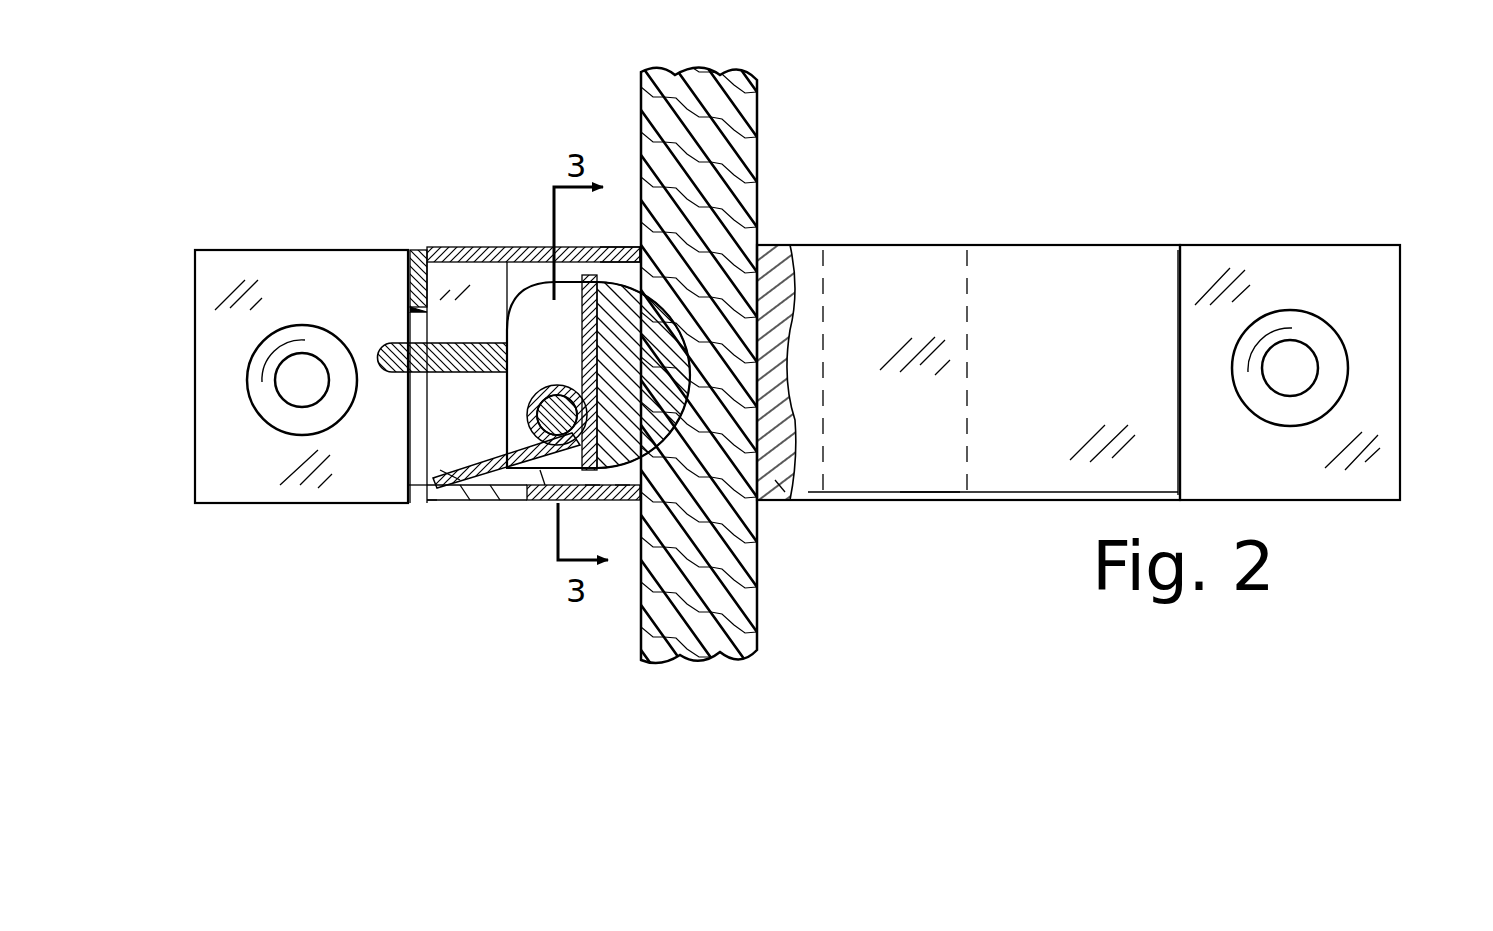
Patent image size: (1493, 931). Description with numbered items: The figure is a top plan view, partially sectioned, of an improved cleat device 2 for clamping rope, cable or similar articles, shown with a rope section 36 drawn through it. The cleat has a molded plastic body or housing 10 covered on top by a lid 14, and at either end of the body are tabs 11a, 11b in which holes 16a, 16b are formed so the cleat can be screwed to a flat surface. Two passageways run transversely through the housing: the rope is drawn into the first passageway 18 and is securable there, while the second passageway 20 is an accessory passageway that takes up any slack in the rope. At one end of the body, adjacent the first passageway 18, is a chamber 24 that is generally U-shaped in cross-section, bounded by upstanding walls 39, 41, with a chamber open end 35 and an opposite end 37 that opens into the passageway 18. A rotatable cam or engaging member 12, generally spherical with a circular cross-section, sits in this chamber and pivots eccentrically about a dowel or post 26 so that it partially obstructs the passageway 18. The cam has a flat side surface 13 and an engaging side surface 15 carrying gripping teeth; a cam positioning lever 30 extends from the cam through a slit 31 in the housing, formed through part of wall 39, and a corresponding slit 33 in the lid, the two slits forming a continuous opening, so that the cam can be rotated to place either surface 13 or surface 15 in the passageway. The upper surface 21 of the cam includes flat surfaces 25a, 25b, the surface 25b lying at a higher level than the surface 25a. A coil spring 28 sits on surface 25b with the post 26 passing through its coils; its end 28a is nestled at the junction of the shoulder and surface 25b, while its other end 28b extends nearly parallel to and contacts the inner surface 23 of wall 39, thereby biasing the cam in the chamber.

The cleat device 2 is at (916, 128).
The body or housing 10 is at (480, 247).
The tab 11a is at (1395, 485).
The tab 11b is at (192, 482).
The cam or engaging member 12 is at (497, 485).
The flat side surface 13 is at (592, 490).
The lid 14 is at (418, 247).
The engaging side surface 15 is at (760, 242).
The hole 16a is at (1288, 310).
The hole 16b is at (300, 325).
The first passageway 18 is at (780, 490).
The second passageway 20 is at (920, 470).
The upper surface 21 is at (507, 388).
The inner surface 23 is at (443, 462).
The chamber 24 is at (473, 302).
The flat surface 25a is at (543, 340).
The flat surface 25b is at (643, 375).
The dowel or post 26 is at (543, 485).
The coil spring 28 is at (522, 247).
The spring end 28a is at (600, 322).
The spring end 28b is at (472, 497).
The cam positioning lever 30 is at (388, 340).
The slit 31 is at (462, 495).
The slit 33 is at (362, 506).
The chamber open end 35 is at (430, 482).
The rope section 36 is at (745, 96).
The opposite end 37 is at (618, 247).
The upstanding wall 39 is at (620, 500).
The upstanding wall 41 is at (462, 247).